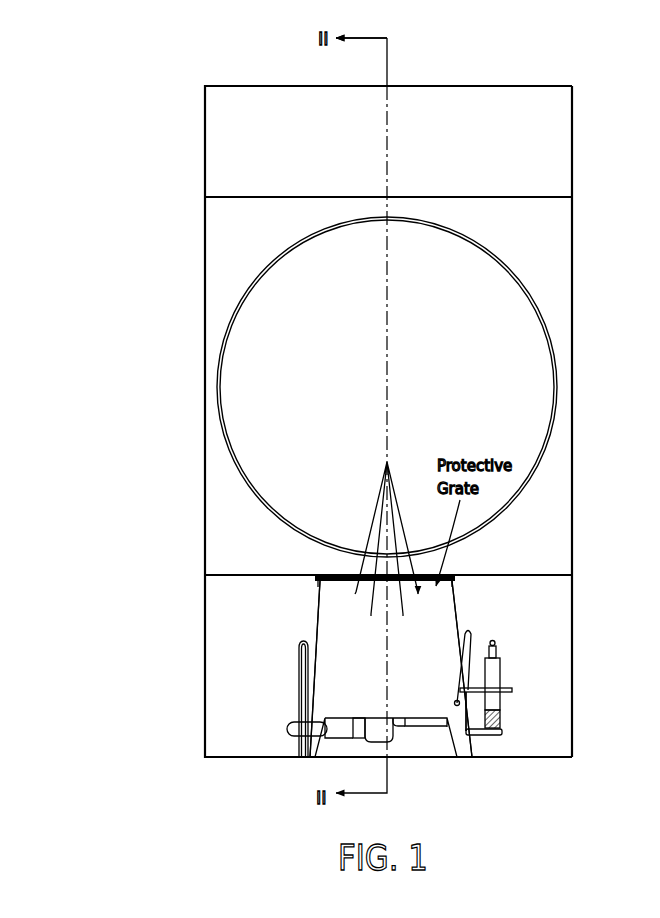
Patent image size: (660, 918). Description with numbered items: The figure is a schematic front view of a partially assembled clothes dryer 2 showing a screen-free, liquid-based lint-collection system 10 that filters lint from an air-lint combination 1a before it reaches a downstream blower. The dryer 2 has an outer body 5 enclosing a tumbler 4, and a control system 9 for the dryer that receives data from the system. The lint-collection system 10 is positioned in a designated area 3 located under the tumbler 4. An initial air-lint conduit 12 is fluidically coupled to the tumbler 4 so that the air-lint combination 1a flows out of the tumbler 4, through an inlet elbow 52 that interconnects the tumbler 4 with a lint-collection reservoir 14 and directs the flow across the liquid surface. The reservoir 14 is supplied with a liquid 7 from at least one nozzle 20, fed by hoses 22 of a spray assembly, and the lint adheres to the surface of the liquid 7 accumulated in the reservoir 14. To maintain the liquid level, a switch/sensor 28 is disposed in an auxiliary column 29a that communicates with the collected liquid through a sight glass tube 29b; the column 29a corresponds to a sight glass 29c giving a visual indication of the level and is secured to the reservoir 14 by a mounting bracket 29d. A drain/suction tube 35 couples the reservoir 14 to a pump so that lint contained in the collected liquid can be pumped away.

The clothes dryer 2 is at (172, 91).
The outer body 5 is at (576, 252).
The control system 9 is at (204, 176).
The tumbler 4 is at (268, 262).
The lint-collection system 10 is at (245, 540).
The air-lint combination 1a is at (386, 461).
The designated area 3 is at (265, 629).
The inlet elbow 52 is at (330, 616).
The initial air-lint conduit 12 is at (461, 610).
The hoses 22 is at (298, 657).
The nozzle 20 is at (295, 698).
The lint-collection reservoir 14 is at (313, 708).
The drain/suction tube 35 is at (337, 739).
The switch/sensor 28 is at (506, 643).
The auxiliary column 29a is at (509, 675).
The mounting bracket 29d is at (513, 693).
The liquid 7 is at (505, 707).
The sight glass 29c is at (504, 719).
The sight glass tube 29b is at (484, 738).